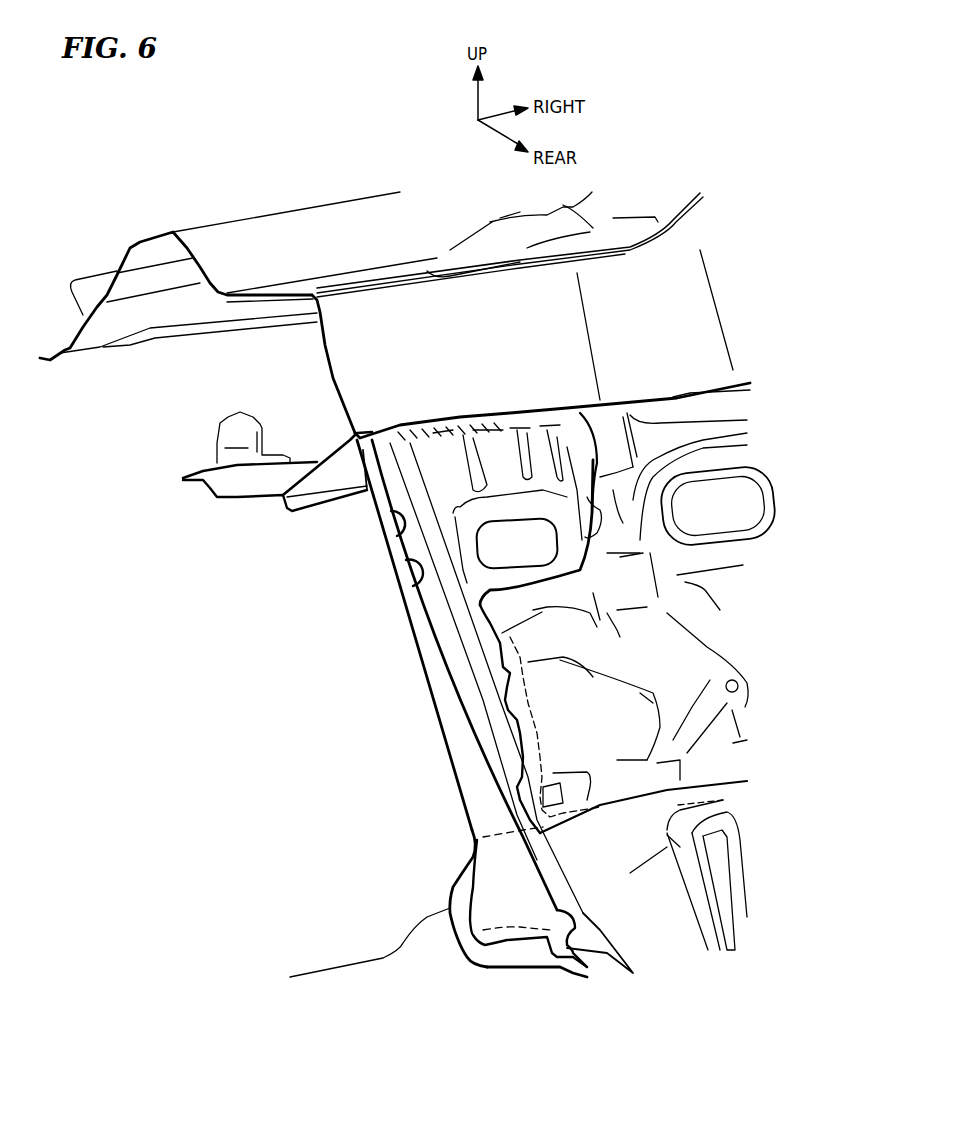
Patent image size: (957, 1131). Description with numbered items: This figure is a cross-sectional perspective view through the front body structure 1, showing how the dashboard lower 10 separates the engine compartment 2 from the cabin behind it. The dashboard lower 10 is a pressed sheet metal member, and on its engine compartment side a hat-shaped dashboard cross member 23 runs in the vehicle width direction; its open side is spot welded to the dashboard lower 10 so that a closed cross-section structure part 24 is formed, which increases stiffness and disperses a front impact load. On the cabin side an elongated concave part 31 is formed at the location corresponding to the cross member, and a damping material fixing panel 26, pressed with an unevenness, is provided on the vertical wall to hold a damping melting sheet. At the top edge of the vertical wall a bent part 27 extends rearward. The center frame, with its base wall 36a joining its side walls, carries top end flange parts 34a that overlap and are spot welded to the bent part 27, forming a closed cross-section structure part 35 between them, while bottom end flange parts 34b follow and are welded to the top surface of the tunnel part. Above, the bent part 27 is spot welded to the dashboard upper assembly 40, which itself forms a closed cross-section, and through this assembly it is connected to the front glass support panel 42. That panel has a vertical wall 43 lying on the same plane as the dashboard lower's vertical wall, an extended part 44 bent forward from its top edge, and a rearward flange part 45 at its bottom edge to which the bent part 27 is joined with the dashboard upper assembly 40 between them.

The vehicle body structure 1 is at (88, 432).
The engine compartment 2 is at (297, 756).
The dashboard lower 10 is at (386, 600).
The dashboard cross member 23 is at (457, 873).
The closed cross-section structure part 24 is at (487, 968).
The damping material fixing panel 26 is at (720, 617).
The bent part 27 is at (553, 410).
The concave part 31 is at (468, 903).
The top end flange part 34a is at (413, 440).
The bottom end flange part 34b is at (607, 960).
The closed cross-section structure part 35 is at (357, 448).
The base wall 36a is at (470, 687).
The dashboard upper assembly 40 is at (190, 495).
The front glass support panel 42 is at (336, 196).
The vertical wall 43 is at (360, 348).
The extended part 44 is at (157, 237).
The flange part 45 is at (636, 395).